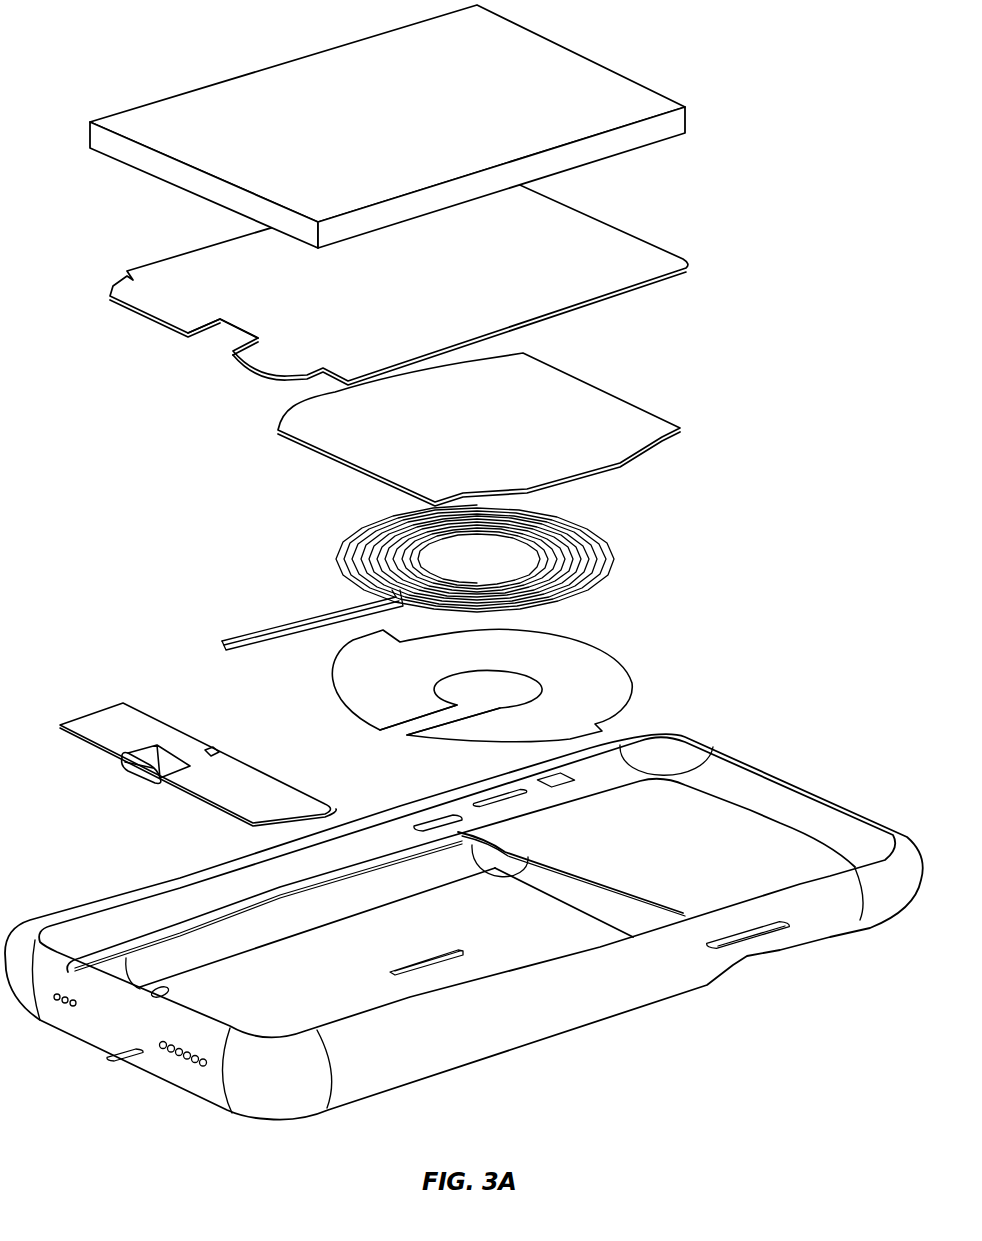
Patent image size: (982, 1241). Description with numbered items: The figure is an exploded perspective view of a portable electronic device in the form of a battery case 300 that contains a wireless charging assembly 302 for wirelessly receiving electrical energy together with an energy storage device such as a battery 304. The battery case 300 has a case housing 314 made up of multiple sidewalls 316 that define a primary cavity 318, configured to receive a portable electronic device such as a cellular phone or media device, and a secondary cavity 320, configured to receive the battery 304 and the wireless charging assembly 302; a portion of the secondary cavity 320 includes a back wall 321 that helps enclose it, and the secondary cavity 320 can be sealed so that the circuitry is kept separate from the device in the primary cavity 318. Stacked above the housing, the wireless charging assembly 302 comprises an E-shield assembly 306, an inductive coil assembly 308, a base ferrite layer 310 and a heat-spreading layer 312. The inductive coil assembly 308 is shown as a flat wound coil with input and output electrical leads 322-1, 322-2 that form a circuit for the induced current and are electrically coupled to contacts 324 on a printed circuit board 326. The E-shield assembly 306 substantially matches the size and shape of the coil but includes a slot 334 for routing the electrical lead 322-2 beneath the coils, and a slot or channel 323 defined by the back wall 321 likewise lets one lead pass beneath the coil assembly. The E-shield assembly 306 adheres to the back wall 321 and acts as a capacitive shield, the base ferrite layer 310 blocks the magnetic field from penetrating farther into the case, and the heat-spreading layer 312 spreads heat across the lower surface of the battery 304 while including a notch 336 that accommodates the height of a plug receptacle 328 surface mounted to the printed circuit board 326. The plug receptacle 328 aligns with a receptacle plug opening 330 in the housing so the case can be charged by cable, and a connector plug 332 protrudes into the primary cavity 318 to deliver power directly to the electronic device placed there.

The battery case 300 is at (78, 90).
The wireless charging assembly 302 is at (715, 180).
The battery 304 is at (458, 85).
The E-shield assembly 306 is at (393, 696).
The inductive coil assembly 308 is at (337, 580).
The base ferrite layer 310 is at (478, 445).
The heat-spreading layer 312 is at (399, 276).
The case housing 314 is at (810, 762).
The sidewalls 316 is at (194, 908).
The primary cavity 318 is at (731, 843).
The secondary cavity 320 is at (307, 1018).
The back wall 321 is at (546, 944).
The electrical lead 322-1 is at (226, 641).
The electrical lead 322-2 is at (236, 649).
The slot or channel 323 is at (390, 969).
The contacts 324 is at (218, 752).
The printed circuit board 326 is at (136, 743).
The plug receptacle 328 is at (128, 768).
The receptacle plug opening 330 is at (126, 1062).
The connector plug 332 is at (170, 993).
The slot 334 is at (385, 737).
The notch 336 is at (208, 344).